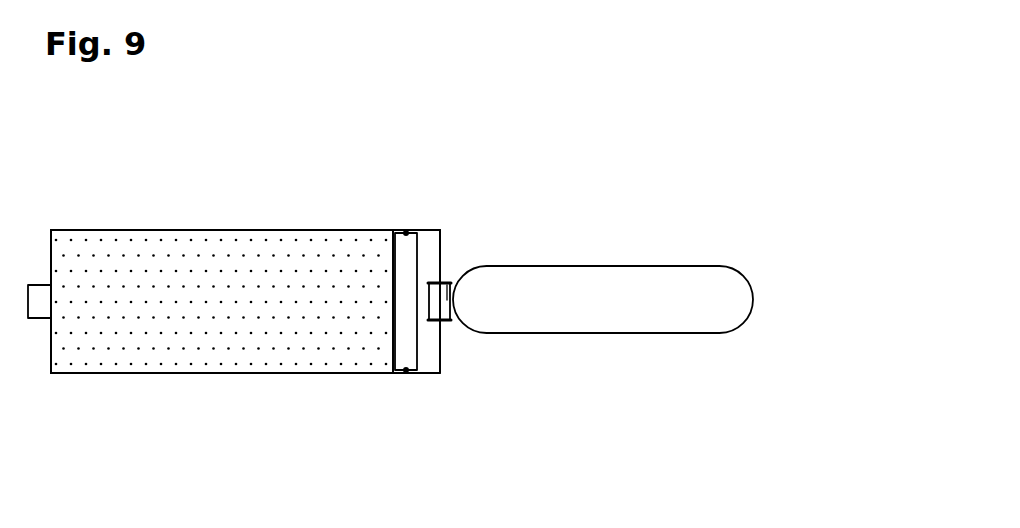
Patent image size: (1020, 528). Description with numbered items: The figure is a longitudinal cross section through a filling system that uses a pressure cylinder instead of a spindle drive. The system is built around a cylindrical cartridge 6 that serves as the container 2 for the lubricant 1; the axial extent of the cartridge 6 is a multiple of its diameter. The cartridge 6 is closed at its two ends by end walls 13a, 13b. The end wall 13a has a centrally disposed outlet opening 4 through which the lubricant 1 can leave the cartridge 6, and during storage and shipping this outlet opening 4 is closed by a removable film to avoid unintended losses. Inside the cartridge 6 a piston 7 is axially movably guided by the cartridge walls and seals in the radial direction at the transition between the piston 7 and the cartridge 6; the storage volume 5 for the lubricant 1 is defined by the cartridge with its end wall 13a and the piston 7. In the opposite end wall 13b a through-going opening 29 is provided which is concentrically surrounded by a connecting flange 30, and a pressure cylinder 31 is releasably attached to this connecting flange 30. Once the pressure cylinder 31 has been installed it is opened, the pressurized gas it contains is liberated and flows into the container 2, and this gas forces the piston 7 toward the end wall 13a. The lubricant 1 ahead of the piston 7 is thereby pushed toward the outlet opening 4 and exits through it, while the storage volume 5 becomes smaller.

The lubricant 1 is at (225, 309).
The container 2 is at (297, 190).
The outlet opening 4 is at (28, 285).
The storage volume 5 is at (317, 352).
The cartridge 6 is at (185, 230).
The piston 7 is at (408, 352).
The end wall 13a is at (51, 352).
The end wall 13b is at (440, 243).
The through-going opening 29 is at (447, 293).
The connecting flange 30 is at (448, 320).
The pressure cylinder 31 is at (587, 312).